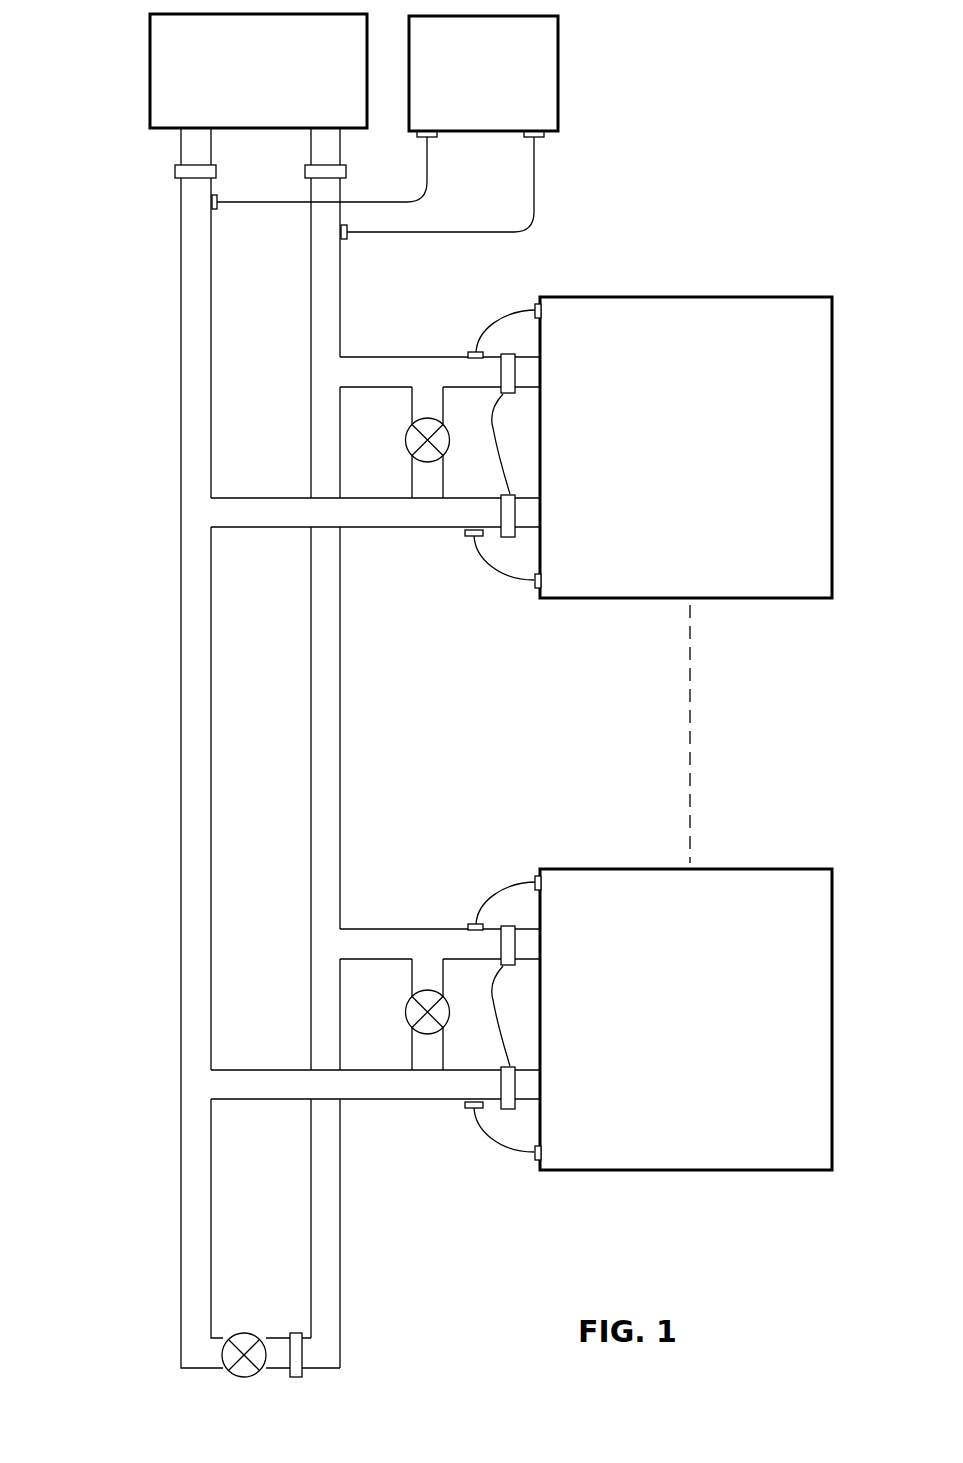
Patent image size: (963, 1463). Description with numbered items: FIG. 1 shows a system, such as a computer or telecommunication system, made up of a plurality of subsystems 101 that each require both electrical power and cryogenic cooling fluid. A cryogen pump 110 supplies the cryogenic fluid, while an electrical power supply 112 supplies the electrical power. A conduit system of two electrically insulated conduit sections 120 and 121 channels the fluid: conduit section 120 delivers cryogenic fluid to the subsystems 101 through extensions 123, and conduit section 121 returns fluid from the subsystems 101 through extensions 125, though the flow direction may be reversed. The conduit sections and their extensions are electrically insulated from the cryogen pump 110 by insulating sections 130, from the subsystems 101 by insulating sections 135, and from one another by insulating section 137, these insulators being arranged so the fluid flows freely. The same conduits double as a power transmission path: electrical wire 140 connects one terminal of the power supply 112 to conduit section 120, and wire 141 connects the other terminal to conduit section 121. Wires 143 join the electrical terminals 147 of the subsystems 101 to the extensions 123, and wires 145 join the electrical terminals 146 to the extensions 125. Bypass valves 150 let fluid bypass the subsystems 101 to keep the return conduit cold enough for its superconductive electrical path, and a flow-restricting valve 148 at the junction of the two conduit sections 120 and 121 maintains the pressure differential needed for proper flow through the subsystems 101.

The subsystems 101 is at (752, 297).
The cryogen pump 110 is at (150, 33).
The electrical power supply 112 is at (559, 33).
The conduit section 120 is at (185, 766).
The conduit section 121 is at (337, 725).
The extensions 123 is at (410, 532).
The extensions 125 is at (415, 357).
The insulating sections 130 is at (175, 168).
The insulating sections 135 is at (484, 730).
The insulating section 137 is at (302, 1375).
The electrical wire 140 is at (427, 172).
The wire 141 is at (536, 181).
The wires 143 is at (487, 567).
The wires 145 is at (496, 322).
The electrical terminals 146 is at (537, 303).
The electrical terminals 147 is at (535, 590).
The valve 148 is at (232, 1373).
The bypass valves 150 is at (412, 428).